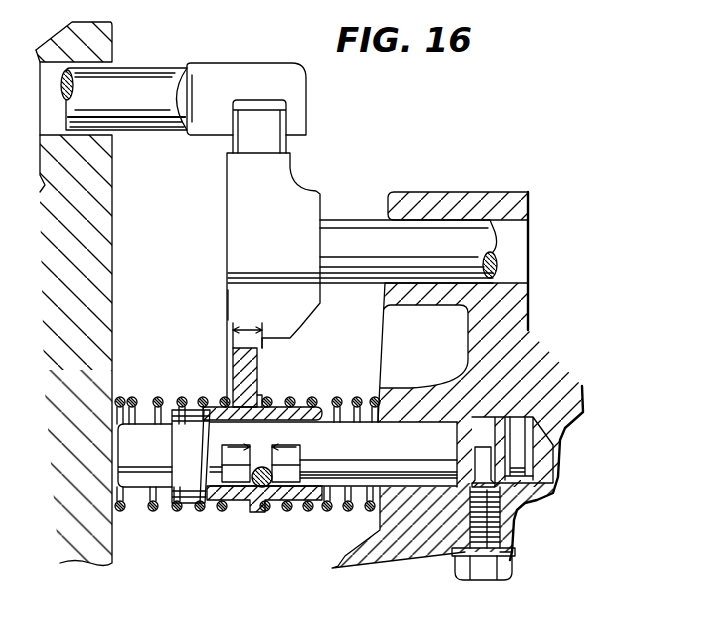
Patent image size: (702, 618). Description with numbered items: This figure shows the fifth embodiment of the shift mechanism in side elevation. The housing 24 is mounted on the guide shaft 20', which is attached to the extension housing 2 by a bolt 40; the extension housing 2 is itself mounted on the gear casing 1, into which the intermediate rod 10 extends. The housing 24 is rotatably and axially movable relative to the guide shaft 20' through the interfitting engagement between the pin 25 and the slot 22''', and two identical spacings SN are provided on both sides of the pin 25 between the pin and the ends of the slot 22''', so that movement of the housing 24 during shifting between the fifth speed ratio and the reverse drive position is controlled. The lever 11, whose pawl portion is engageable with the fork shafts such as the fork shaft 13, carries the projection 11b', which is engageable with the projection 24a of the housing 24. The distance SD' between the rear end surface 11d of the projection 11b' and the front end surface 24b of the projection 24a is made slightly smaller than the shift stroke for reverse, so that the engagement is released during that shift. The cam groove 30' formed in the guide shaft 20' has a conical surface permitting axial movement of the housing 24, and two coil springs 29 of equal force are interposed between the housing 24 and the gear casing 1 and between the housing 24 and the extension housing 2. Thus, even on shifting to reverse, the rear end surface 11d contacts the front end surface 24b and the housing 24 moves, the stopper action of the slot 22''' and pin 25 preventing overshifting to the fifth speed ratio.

The gear casing 1 is at (112, 238).
The extension housing 2 is at (388, 553).
The intermediate rod 10 is at (356, 226).
The lever 11 is at (228, 258).
The projection of the lever 11b' is at (211, 303).
The rear end surface of the lever projection 11d is at (263, 361).
The fork shaft 13 is at (163, 68).
The guide shaft 20' is at (291, 388).
The slot 22''' is at (266, 497).
The housing 24 is at (206, 505).
The projection of the housing 24a is at (272, 395).
The front end surface of the housing projection 24b is at (233, 362).
The pin 25 is at (248, 510).
The coil springs 29 is at (152, 398).
The cam groove 30' is at (287, 454).
The bolt 40 is at (485, 580).
The distance between the rear end surface of the lever projection and the front end SD' is at (265, 312).
The spacing between the pin and the end of the slot SN is at (262, 442).